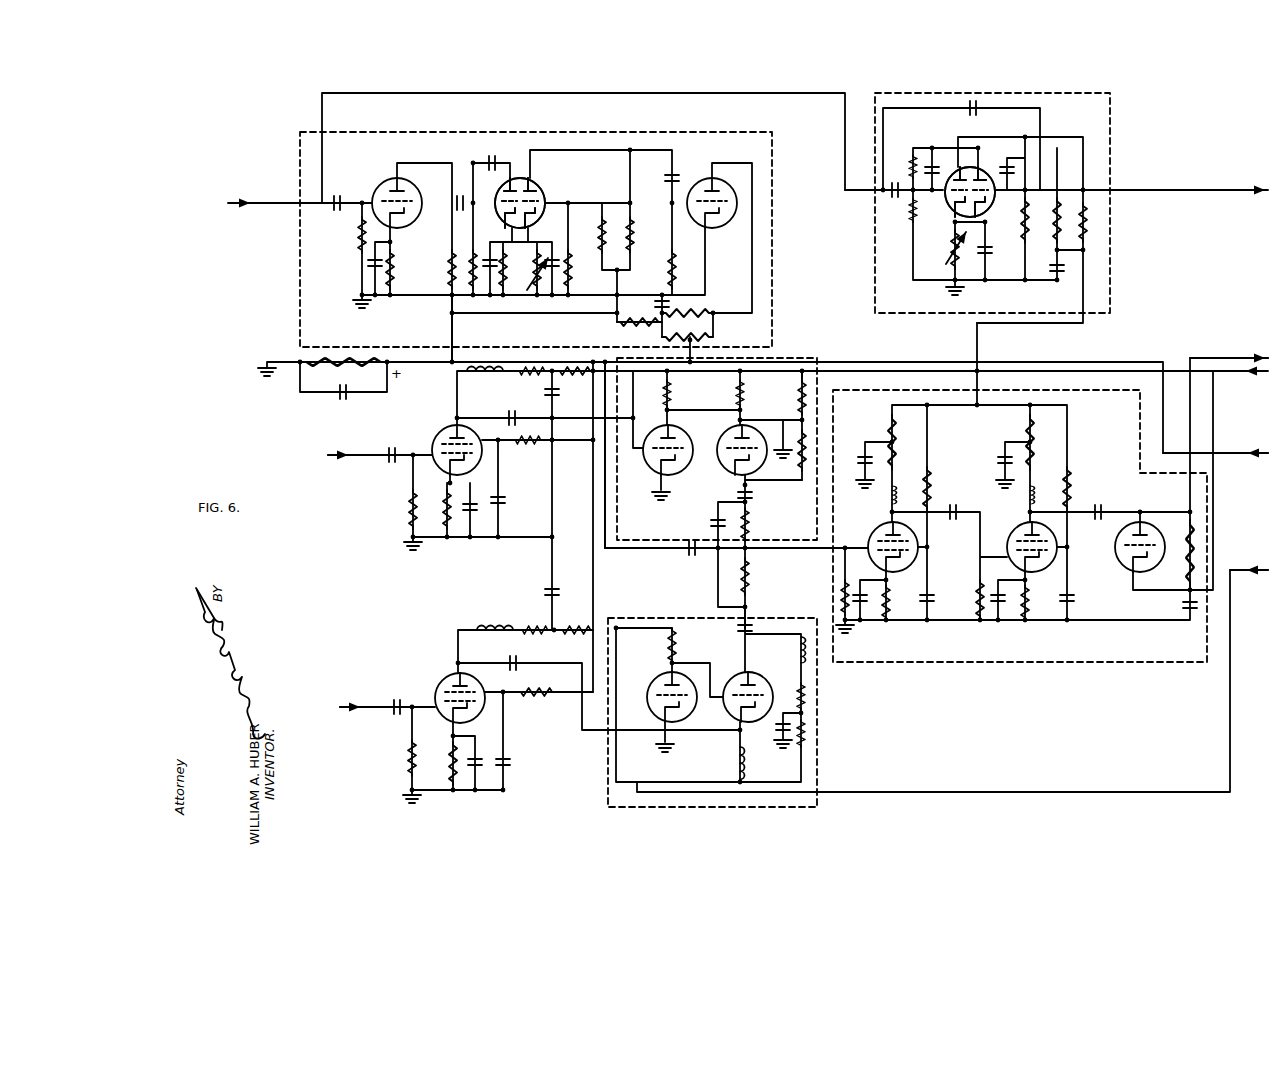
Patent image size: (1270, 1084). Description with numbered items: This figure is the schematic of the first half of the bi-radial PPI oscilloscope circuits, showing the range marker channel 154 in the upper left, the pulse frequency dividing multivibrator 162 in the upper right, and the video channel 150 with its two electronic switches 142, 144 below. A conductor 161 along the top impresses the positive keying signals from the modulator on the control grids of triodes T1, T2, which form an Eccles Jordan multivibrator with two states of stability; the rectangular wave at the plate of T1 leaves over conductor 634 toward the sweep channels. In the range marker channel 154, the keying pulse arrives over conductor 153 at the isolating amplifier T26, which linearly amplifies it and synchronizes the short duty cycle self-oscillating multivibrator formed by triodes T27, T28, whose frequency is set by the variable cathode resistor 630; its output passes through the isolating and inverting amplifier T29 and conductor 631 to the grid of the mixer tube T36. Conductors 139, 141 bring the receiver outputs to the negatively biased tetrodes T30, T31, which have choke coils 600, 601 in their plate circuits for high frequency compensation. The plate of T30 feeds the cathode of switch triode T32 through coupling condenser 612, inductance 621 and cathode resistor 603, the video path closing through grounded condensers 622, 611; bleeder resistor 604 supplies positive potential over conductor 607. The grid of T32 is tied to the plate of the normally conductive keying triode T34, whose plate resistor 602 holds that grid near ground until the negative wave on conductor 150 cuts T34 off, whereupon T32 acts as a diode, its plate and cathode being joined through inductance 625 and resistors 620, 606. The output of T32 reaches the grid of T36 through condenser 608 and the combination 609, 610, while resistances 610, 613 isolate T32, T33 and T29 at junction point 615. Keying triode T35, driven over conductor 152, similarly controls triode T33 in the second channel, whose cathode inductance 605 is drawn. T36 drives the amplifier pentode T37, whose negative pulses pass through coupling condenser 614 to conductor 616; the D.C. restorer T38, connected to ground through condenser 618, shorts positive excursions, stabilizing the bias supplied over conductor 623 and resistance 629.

The conductor 161 is at (625, 93).
The range marker channel 154 is at (685, 132).
The conductor 153 is at (225, 202).
The pulse frequency dividing multivibrator 162 is at (1138, 125).
The conductor 634 is at (1236, 186).
The conductor 616 is at (1247, 353).
The conductor 623 is at (1256, 376).
The video amplifier and mixer channel 150 is at (1120, 662).
The conductor 152 is at (1260, 567).
The electronic switch 142 is at (791, 358).
The electronic switch 144 is at (812, 807).
The conductor 139 is at (335, 457).
The conductor 141 is at (337, 707).
The bleeder resistor 604 is at (343, 370).
The grounded condenser 622 is at (344, 402).
The choke coil 600 is at (485, 379).
The coupling condenser 612 is at (511, 416).
The grounded condenser 611 is at (472, 524).
The plate resistor 602 is at (664, 389).
The cathode resistor 603 is at (735, 385).
The conductor 607 is at (800, 373).
The inductance 621 is at (735, 409).
The resistor 606 is at (799, 397).
The resistor 620 is at (802, 458).
The inductance 625 is at (810, 480).
The condenser 608 is at (735, 494).
The condenser 609 is at (712, 523).
The resistance 610 is at (750, 522).
The junction point 615 is at (751, 549).
The resistance 613 is at (752, 582).
The conductor 631 is at (624, 550).
The choke coil 601 is at (489, 635).
The inductance 605 is at (748, 764).
The coupling condenser 614 is at (1099, 506).
The resistance 629 is at (1200, 529).
The coupling condenser 618 is at (1182, 603).
The variable cathode resistor 630 is at (532, 294).
The isolating amplifier T26 is at (387, 182).
The multivibrator triode T27 is at (507, 185).
The multivibrator triode T28 is at (540, 185).
The isolating and inverting amplifier T29 is at (710, 178).
The triode T1 is at (951, 208).
The triode T2 is at (991, 208).
The tetrode T30 is at (438, 434).
The tetrode T31 is at (441, 681).
The triode T32 is at (733, 473).
The triode T33 is at (763, 677).
The keying triode T34 is at (656, 473).
The keying triode T35 is at (659, 677).
The mixer tube T36 is at (878, 532).
The amplifier pentode T37 is at (1020, 532).
The D.C. diode restorer T38 is at (1115, 533).